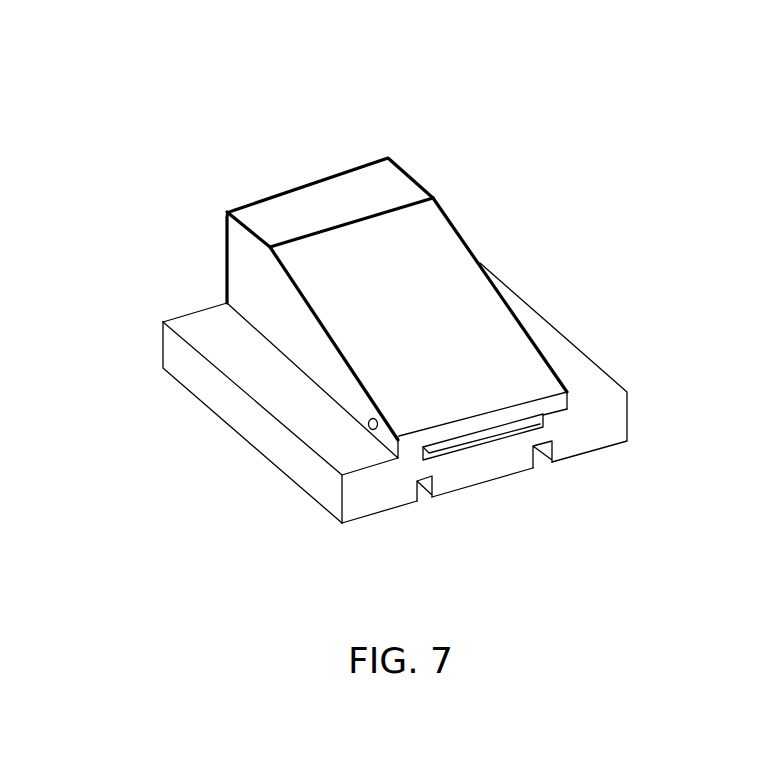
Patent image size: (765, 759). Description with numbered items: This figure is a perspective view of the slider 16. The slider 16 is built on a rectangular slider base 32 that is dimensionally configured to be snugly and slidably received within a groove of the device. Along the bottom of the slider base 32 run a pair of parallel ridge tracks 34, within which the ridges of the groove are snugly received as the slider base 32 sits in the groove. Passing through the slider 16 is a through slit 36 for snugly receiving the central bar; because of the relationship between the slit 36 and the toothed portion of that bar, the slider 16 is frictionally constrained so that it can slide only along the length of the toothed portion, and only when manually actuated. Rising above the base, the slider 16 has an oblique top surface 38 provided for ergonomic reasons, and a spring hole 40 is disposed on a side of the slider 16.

The slider 16 is at (168, 105).
The slider base 32 is at (247, 412).
The ridge tracks 34 is at (421, 504).
The slit 36 is at (507, 428).
The oblique top surface 38 is at (410, 275).
The spring hole 40 is at (366, 426).